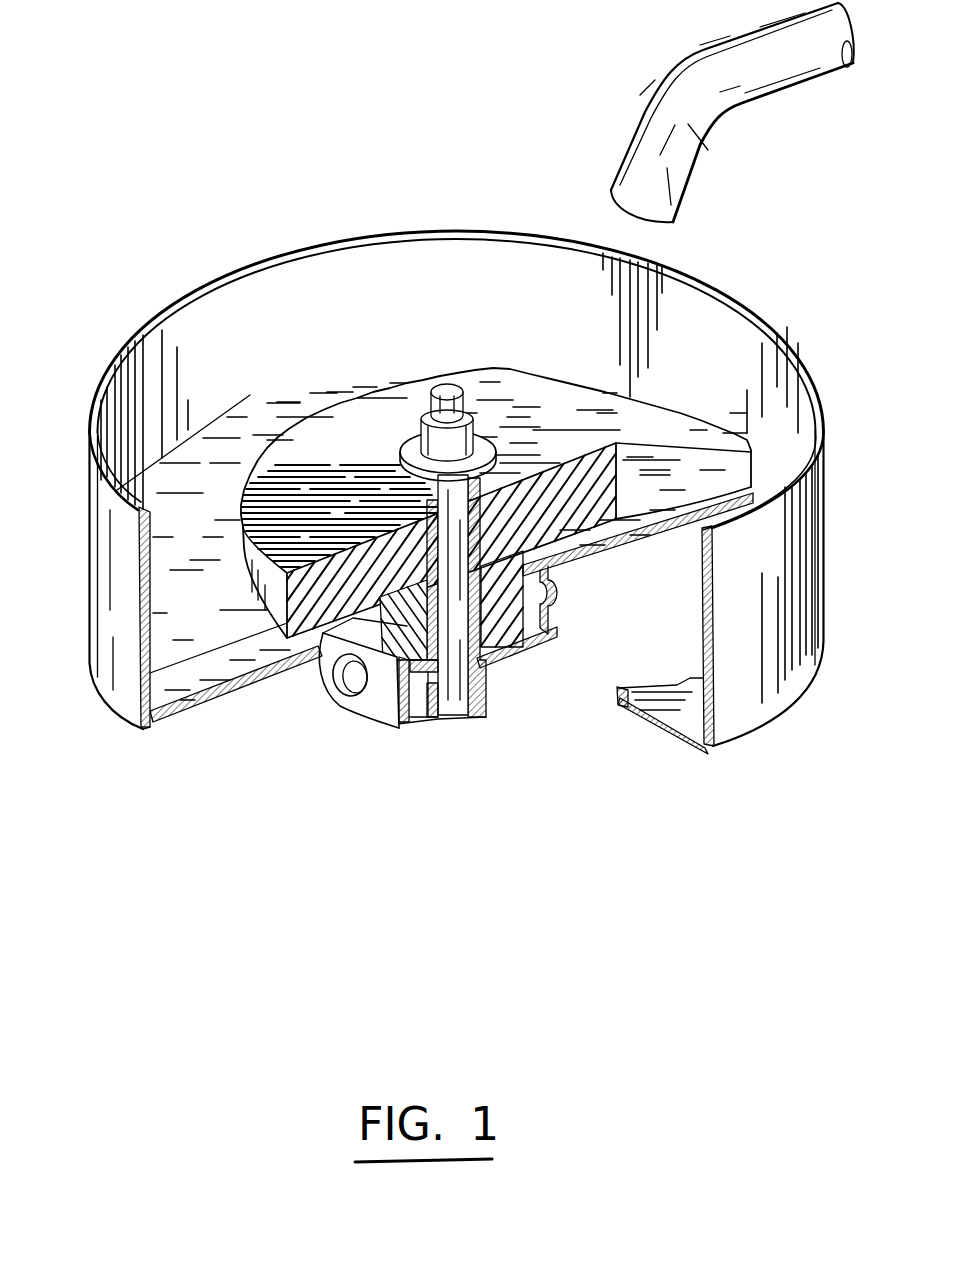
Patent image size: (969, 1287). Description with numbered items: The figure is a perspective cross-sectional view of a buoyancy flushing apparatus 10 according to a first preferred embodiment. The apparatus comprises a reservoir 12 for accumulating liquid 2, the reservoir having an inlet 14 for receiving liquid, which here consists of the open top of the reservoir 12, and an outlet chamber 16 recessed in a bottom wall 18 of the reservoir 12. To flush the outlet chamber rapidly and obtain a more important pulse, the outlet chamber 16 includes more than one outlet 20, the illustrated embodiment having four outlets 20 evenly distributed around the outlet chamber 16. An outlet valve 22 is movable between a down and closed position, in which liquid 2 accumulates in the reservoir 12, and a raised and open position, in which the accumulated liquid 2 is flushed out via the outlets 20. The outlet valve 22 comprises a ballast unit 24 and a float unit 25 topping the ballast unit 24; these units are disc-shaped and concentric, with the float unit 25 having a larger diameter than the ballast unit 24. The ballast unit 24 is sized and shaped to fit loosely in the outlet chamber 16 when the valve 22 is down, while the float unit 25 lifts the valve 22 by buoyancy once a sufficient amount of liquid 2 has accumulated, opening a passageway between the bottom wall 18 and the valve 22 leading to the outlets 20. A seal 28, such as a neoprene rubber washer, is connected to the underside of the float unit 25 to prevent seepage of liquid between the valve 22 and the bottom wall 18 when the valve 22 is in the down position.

The buoyancy flushing apparatus 10 is at (226, 112).
The reservoir 12 is at (805, 327).
The inlet 14 is at (234, 318).
The outlet chamber 16 is at (388, 712).
The bottom wall 18 is at (200, 711).
The liquid 2 is at (169, 690).
The outlet 20 is at (548, 600).
The outlet valve 22 is at (363, 457).
The ballast unit 24 is at (491, 650).
The float unit 25 is at (553, 497).
The seal 28 is at (316, 666).